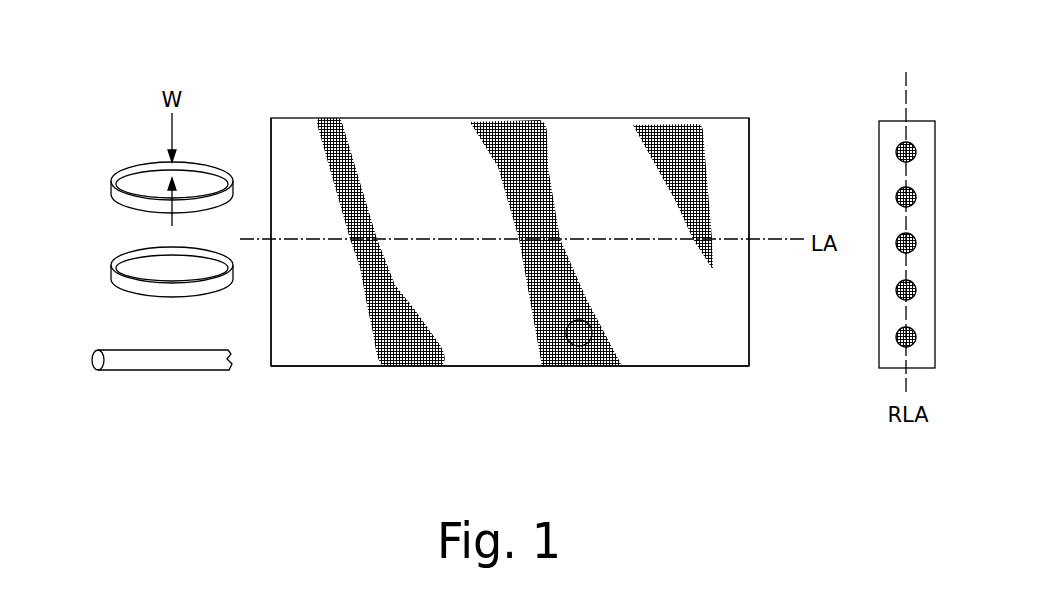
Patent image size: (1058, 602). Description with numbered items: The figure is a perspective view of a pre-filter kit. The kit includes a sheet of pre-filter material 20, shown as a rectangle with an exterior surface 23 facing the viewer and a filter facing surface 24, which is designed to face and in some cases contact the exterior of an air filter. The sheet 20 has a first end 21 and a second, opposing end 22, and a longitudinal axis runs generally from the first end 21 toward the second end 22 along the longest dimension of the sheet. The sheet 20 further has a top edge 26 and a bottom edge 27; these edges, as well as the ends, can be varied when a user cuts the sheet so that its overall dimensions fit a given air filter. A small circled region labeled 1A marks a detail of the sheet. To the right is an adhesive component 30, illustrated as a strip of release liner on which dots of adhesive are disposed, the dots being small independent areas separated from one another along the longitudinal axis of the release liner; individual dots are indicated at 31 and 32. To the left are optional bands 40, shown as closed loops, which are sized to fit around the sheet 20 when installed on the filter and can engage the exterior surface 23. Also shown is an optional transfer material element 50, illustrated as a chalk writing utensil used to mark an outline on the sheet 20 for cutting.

The sheet of pre-filter material 20 is at (414, 69).
The first end 21 is at (290, 367).
The second end 22 is at (723, 367).
The exterior surface 23 is at (497, 333).
The filter facing surface 24 is at (538, 173).
The top edge 26 is at (320, 118).
The bottom edge 27 is at (379, 367).
The detail region 1A is at (587, 345).
The adhesive component 30 is at (866, 202).
The sensors 31 is at (900, 238).
The sensor 32 is at (897, 303).
The bands 40 is at (87, 210).
The transfer material element 50 is at (139, 399).